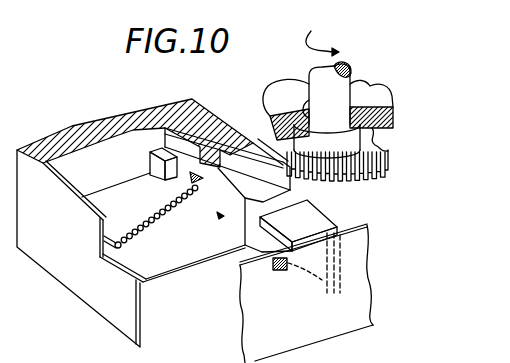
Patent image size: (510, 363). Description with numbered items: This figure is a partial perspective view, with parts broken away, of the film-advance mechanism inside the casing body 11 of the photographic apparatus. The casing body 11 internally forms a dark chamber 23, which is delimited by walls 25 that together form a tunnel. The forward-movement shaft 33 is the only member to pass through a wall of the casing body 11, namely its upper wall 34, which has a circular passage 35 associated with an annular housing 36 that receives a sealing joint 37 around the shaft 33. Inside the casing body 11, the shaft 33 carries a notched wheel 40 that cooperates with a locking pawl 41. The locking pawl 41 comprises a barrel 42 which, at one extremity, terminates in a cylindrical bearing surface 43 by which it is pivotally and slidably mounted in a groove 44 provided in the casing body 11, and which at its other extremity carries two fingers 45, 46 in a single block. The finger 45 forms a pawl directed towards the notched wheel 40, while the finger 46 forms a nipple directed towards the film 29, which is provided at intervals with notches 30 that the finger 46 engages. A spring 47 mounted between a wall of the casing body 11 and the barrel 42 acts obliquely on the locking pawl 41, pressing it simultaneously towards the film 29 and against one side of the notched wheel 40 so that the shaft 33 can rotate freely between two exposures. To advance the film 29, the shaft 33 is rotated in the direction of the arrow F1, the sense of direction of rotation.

The casing body 11 is at (53, 143).
The cylindrical bearing surface 43 is at (128, 122).
The groove 44 is at (245, 158).
The barrel 42 is at (212, 183).
The spring 47 is at (137, 224).
The locking pawl 41 is at (219, 216).
The dark chamber 23 is at (191, 279).
The walls 25 is at (162, 280).
The notched wheel 40 is at (368, 198).
The film 29 is at (343, 324).
The notches 30 is at (274, 266).
The finger 46 is at (288, 267).
The finger 45 is at (305, 195).
The upper wall 34 is at (277, 101).
The circular passage 35 is at (327, 93).
The annular housing 36 is at (303, 80).
The sealing joint 37 is at (368, 92).
The forward-movement shaft 33 is at (350, 67).
The arrow F1 is at (322, 34).